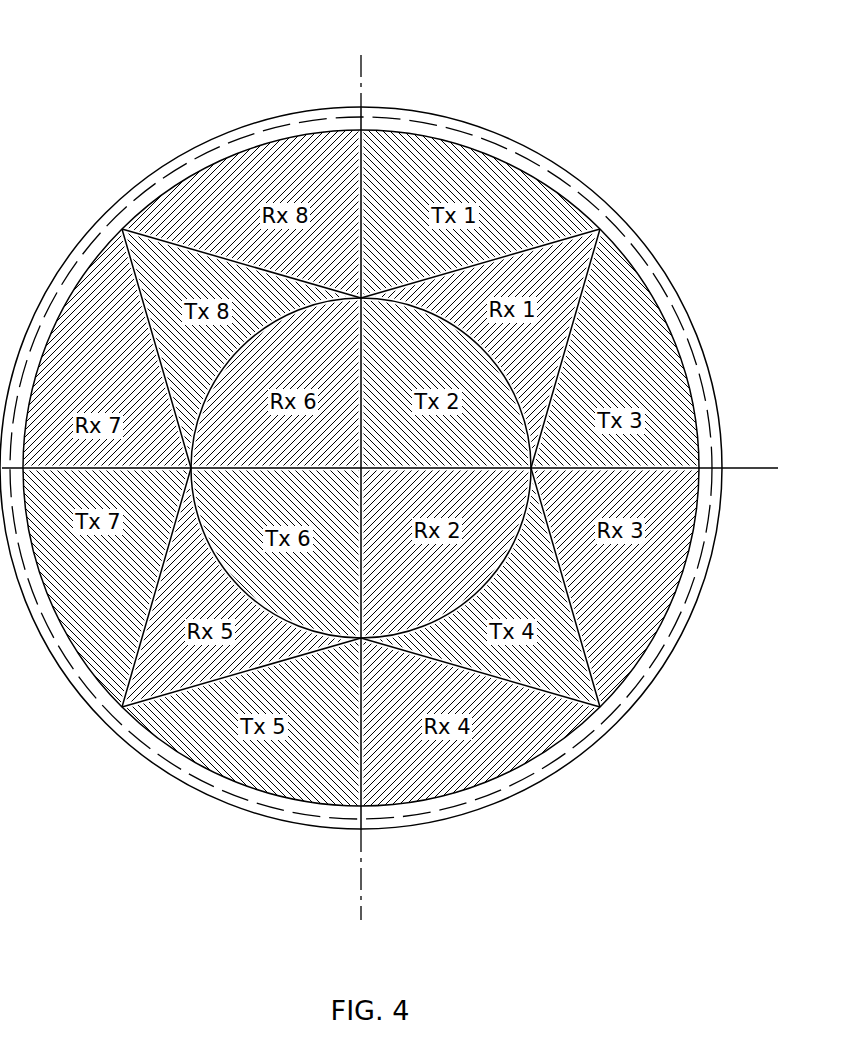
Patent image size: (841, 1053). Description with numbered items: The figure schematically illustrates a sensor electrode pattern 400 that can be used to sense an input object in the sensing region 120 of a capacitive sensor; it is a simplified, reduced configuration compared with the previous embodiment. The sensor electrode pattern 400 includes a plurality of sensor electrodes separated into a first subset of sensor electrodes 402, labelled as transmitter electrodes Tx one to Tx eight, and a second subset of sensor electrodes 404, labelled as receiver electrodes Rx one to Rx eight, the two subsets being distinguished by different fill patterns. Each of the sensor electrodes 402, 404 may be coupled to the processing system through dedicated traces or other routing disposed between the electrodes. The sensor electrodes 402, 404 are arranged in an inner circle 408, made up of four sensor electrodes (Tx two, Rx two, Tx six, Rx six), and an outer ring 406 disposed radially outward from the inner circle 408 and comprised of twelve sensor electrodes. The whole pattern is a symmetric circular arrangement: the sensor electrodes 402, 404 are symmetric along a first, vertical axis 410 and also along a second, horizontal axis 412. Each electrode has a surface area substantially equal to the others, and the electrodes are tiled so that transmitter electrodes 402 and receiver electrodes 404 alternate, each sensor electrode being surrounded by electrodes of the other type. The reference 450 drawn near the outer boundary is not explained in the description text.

The sensor electrode pattern 400 is at (170, 78).
The sensing region 120 is at (394, 120).
The outer housing ring 450 is at (458, 118).
The sensor electrodes 402 is at (478, 150).
The sensor electrodes 404 is at (597, 240).
The outer ring 406 is at (655, 348).
The inner circle 408 is at (476, 433).
The first axis 410 is at (361, 897).
The second axis 412 is at (762, 470).